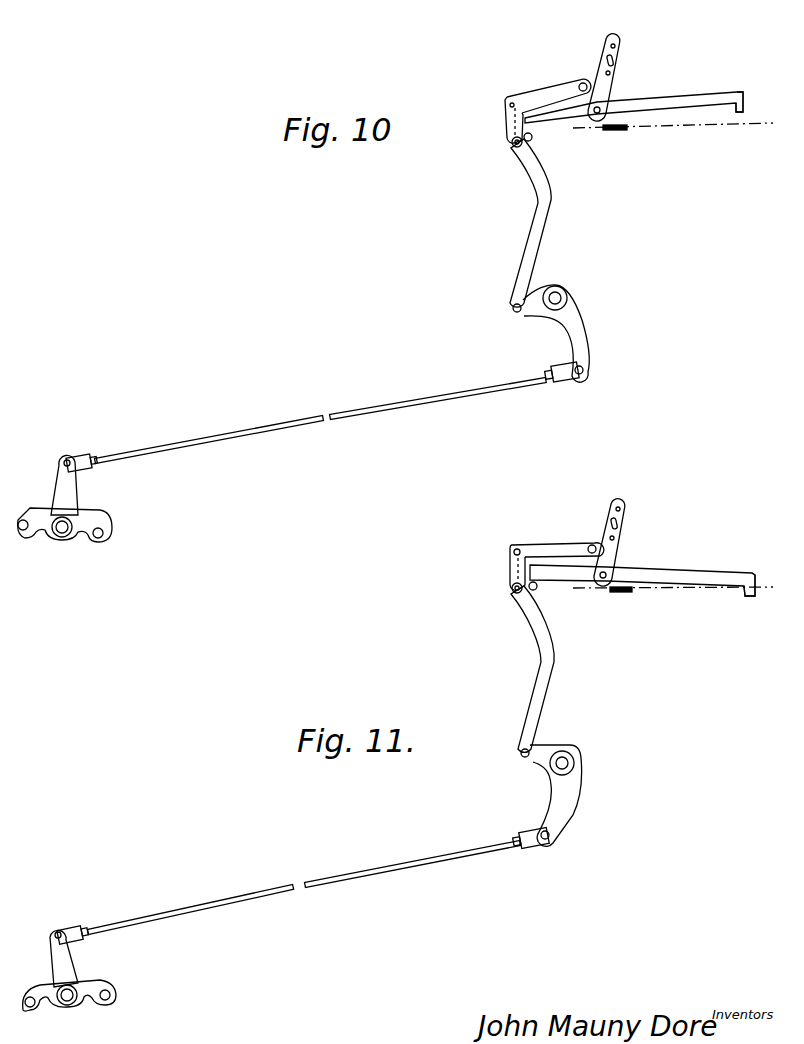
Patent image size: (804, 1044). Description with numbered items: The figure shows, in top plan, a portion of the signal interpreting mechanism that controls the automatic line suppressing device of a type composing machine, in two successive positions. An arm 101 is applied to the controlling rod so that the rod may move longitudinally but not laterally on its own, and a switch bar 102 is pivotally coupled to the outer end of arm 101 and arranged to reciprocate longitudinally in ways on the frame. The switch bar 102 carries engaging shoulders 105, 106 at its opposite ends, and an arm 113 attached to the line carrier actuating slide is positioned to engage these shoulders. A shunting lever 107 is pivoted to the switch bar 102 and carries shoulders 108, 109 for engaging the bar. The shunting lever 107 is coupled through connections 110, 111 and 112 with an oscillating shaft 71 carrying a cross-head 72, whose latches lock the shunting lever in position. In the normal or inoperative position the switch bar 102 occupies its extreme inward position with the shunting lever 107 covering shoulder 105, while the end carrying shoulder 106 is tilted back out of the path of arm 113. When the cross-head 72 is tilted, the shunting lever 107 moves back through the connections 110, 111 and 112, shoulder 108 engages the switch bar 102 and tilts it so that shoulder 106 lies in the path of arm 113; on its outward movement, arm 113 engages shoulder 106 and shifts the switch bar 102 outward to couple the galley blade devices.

In FIG. 10, the oscillating shaft 71 is at (53, 540).
In FIG. 11, the oscillating shaft 71 is at (78, 978).
In FIG. 10, the cross-head 72 is at (92, 522).
In FIG. 11, the cross-head 72 is at (93, 998).
In FIG. 10, the arm 101 is at (616, 70).
In FIG. 10, the switch bar 102 is at (668, 110).
In FIG. 10, the engaging shoulder 105 is at (533, 134).
In FIG. 11, the engaging shoulder 105 is at (538, 586).
In FIG. 10, the engaging shoulder 106 is at (758, 85).
In FIG. 11, the engaging shoulder 106 is at (750, 594).
In FIG. 10, the shunting lever 107 is at (549, 85).
In FIG. 11, the shunting lever 107 is at (555, 534).
In FIG. 10, the shoulder 108 is at (507, 107).
In FIG. 11, the shoulder 108 is at (514, 554).
In FIG. 10, the shoulder 109 is at (513, 147).
In FIG. 11, the shoulder 109 is at (512, 591).
In FIG. 10, the connection 110 is at (321, 417).
In FIG. 11, the connection 110 is at (176, 900).
In FIG. 10, the connection 111 is at (580, 301).
In FIG. 11, the connection 111 is at (553, 805).
In FIG. 10, the connection 112 is at (551, 225).
In FIG. 11, the connection 112 is at (540, 668).
In FIG. 10, the arm 113 is at (617, 132).
In FIG. 11, the arm 113 is at (625, 594).